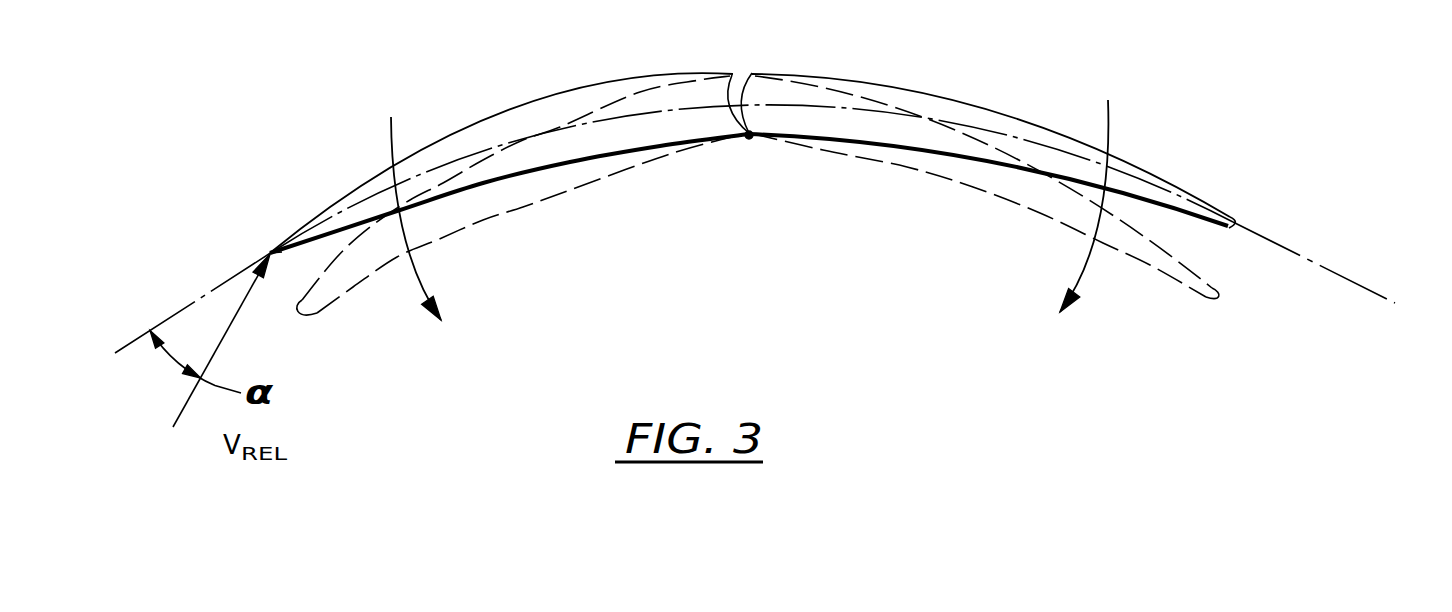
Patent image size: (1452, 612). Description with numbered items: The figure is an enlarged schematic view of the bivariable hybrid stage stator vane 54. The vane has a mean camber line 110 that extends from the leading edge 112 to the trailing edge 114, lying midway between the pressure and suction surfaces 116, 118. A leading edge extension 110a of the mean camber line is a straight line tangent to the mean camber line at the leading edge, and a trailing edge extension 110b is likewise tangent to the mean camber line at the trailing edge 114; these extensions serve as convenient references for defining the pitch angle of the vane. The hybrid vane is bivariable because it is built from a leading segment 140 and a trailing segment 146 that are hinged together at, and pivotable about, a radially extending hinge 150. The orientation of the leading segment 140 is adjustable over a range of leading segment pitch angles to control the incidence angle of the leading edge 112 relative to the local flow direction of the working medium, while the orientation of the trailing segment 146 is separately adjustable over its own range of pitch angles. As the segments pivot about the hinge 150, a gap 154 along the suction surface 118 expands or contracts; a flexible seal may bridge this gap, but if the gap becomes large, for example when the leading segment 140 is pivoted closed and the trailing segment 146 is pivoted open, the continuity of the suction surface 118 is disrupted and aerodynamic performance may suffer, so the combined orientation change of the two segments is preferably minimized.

The mean camber line 110 is at (742, 173).
The leading edge extension 110a is at (188, 301).
The trailing edge extension 110b is at (1352, 283).
The leading edge 112 is at (272, 252).
The trailing edge 114 is at (1237, 221).
The pressure surface 116 is at (628, 152).
The suction surface 118 is at (633, 80).
The leading segment 140 is at (457, 173).
The trailing segment 146 is at (1034, 175).
The hinge 150 is at (750, 137).
The gap 154 is at (741, 72).
The hybrid stage stator vane 54 is at (1000, 113).